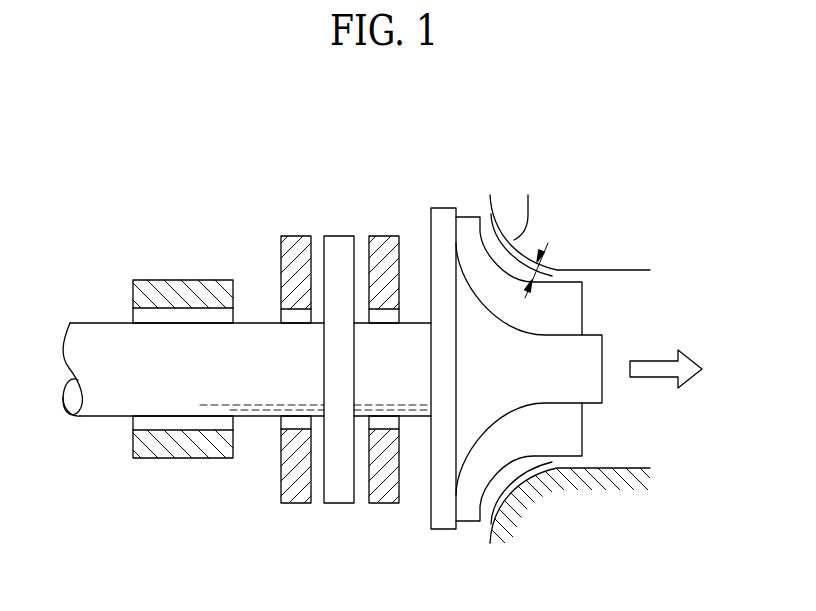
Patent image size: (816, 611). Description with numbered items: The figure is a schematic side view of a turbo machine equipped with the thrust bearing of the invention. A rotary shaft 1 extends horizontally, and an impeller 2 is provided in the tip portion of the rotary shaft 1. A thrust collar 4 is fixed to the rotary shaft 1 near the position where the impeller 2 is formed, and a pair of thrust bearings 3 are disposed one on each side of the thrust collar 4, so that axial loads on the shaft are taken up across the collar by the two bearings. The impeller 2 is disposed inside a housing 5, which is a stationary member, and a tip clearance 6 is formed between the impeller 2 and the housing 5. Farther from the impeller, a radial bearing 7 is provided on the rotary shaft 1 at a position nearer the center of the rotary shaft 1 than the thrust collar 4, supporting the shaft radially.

The rotary shaft 1 is at (97, 330).
The impeller 2 is at (485, 272).
The thrust bearings 3 is at (295, 247).
The thrust collar 4 is at (340, 248).
The housing 5 is at (516, 240).
The tip clearance 6 is at (542, 276).
The radial bearing 7 is at (184, 297).